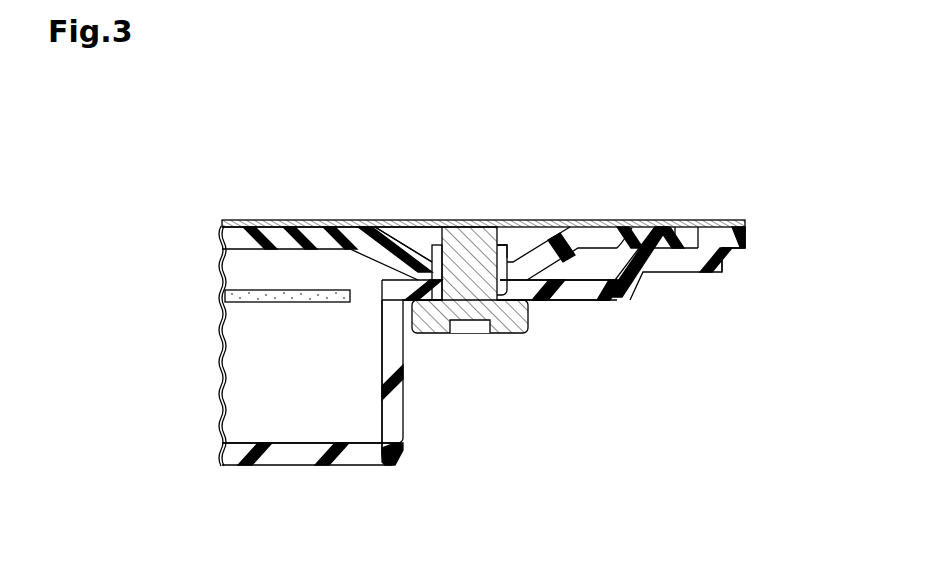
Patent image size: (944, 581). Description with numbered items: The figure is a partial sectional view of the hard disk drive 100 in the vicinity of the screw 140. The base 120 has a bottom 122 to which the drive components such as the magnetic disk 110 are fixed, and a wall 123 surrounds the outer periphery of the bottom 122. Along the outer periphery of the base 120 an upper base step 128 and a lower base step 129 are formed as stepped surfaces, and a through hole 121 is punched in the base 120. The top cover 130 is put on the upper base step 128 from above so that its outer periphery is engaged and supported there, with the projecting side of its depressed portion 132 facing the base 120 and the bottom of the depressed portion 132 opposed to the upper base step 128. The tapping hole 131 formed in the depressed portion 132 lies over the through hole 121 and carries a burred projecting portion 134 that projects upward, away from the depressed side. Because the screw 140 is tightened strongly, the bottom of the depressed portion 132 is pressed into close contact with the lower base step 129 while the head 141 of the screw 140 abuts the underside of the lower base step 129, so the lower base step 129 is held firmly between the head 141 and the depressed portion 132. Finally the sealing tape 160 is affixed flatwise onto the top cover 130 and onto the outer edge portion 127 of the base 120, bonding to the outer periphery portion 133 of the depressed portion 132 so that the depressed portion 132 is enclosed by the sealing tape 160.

The hard disk drive 100 is at (182, 150).
The magnetic disk 110 is at (226, 302).
The base 120 is at (226, 449).
The through hole 121 is at (505, 289).
The bottom 122 is at (284, 436).
The wall 123 is at (374, 374).
The outer edge portion 127 is at (733, 227).
The upper base step 128 is at (686, 227).
The lower base step 129 is at (632, 227).
The top cover 130 is at (226, 233).
The tapping hole 131 is at (535, 227).
The depressed portion 132 is at (380, 226).
The outer periphery portion 133 is at (590, 226).
The projecting portion 134 is at (500, 242).
The screw 140 is at (462, 226).
The head 141 is at (482, 334).
The sealing tape 160 is at (262, 220).